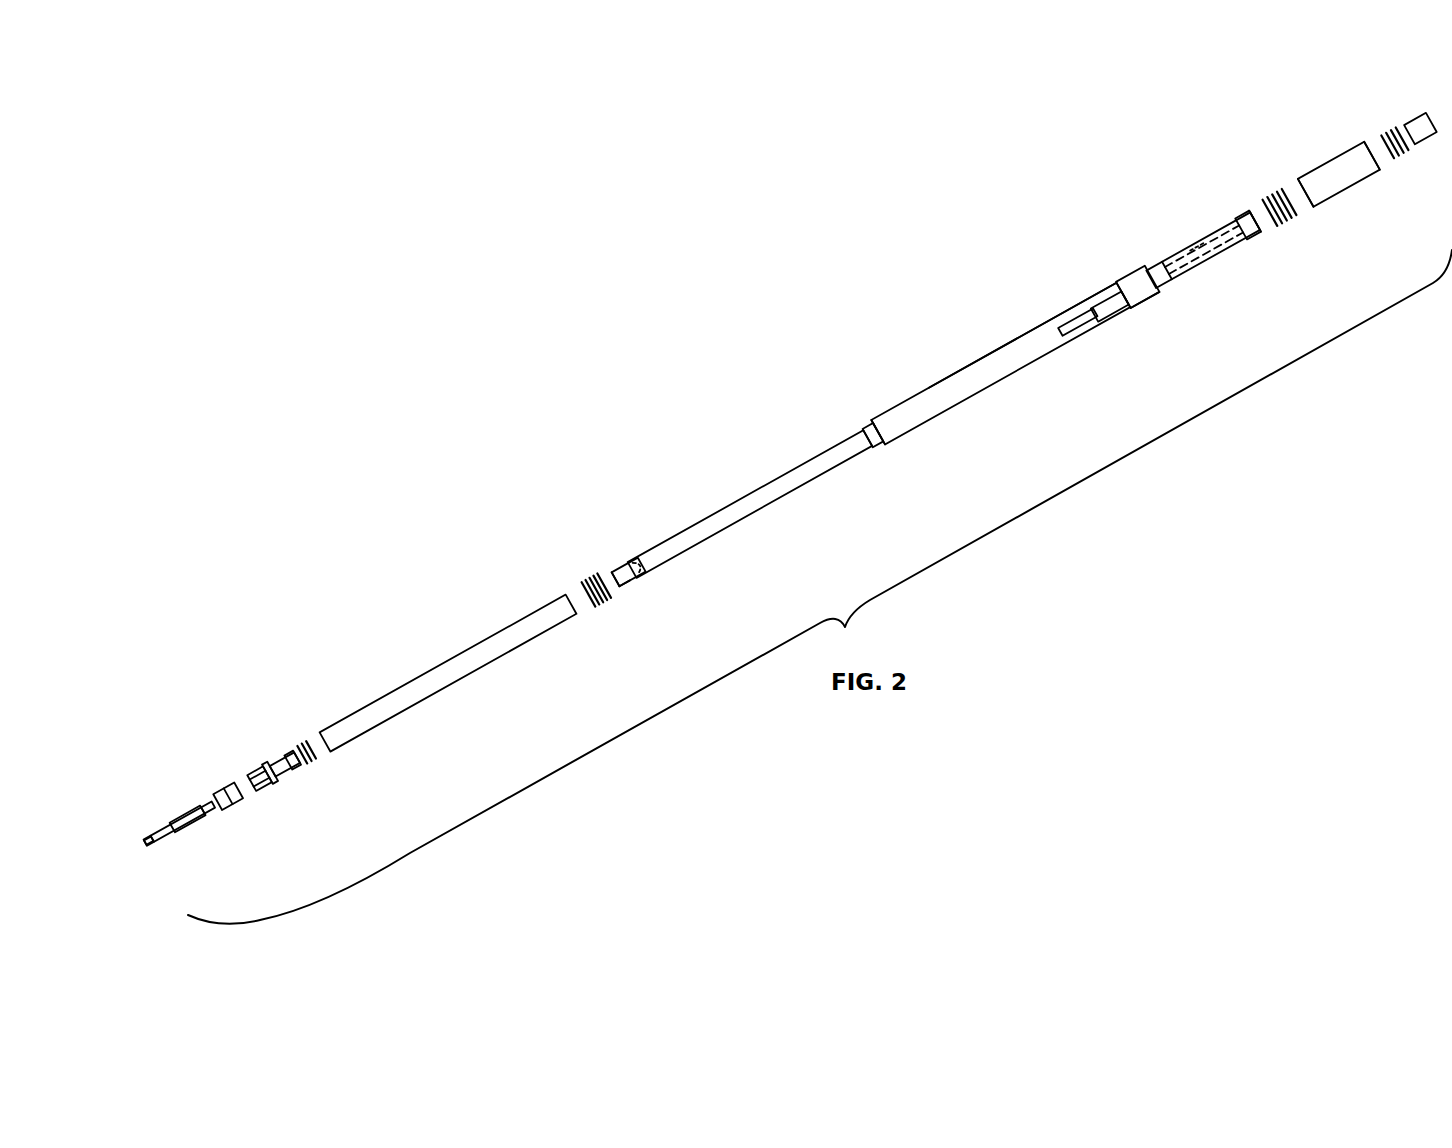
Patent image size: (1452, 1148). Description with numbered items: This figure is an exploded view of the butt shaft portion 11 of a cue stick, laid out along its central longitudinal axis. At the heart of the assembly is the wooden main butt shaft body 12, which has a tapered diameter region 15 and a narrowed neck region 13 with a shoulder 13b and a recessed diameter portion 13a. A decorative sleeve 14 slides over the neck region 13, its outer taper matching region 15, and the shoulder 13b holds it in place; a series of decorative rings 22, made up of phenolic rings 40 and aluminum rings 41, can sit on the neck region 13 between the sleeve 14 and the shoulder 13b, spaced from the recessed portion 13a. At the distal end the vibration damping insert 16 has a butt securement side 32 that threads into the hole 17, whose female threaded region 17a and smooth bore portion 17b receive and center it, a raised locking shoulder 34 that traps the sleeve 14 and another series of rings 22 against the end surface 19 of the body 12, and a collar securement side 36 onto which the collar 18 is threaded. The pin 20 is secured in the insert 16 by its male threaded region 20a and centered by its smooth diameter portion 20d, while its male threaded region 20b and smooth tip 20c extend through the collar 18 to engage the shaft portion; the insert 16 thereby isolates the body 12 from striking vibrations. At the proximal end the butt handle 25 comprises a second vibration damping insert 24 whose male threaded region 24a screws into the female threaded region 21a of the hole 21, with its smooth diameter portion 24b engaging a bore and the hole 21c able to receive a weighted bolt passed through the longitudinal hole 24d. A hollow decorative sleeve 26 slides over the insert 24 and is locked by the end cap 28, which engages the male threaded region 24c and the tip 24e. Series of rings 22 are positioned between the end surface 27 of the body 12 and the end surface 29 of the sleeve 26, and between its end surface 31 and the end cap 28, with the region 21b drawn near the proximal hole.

The butt shaft portion 11 is at (854, 283).
The main butt shaft body 12 is at (977, 357).
The narrowed neck region 13 is at (781, 499).
The recessed diameter portion 13a is at (878, 442).
The shoulder 13b is at (870, 423).
The decorative sleeve 14 is at (453, 655).
The tapered diameter region 15 is at (1017, 337).
The vibration damping insert 16 is at (284, 779).
The hole 17 is at (663, 577).
The female threaded region 17a is at (642, 568).
The smooth female diameter bore portion 17b is at (625, 582).
The collar 18 is at (232, 785).
The distal end surface 19 is at (620, 580).
The pin 20 is at (188, 820).
The male threaded region 20a is at (205, 815).
The male threaded region 20b is at (173, 840).
The smooth tip 20c is at (145, 838).
The smooth male diameter portion 20d is at (183, 820).
The hole 21 is at (1095, 300).
The female threaded region 21a is at (1090, 302).
The insert sleeve 21b is at (1120, 282).
The hole 21c is at (1068, 330).
The series of decorative rings 22 is at (297, 726).
The butt handle vibration damping insert 24 is at (1222, 251).
The male threaded region 24a is at (1168, 283).
The smooth diameter portion 24b is at (1213, 260).
The male threaded region 24c is at (1248, 237).
The hole 24d is at (1197, 247).
The tip 24e is at (1255, 218).
The butt handle 25 is at (1286, 210).
The decorative sleeve 26 is at (1334, 160).
The end surface 27 is at (1128, 312).
The end cap 28 is at (1420, 143).
The end surface 29 is at (1297, 185).
The end surface 31 is at (1370, 140).
The butt securement side 32 is at (287, 772).
The raised locking shoulder 34 is at (277, 790).
The collar securement side 36 is at (260, 790).
The phenolic rings 40 is at (577, 587).
The aluminum rings 41 is at (585, 582).